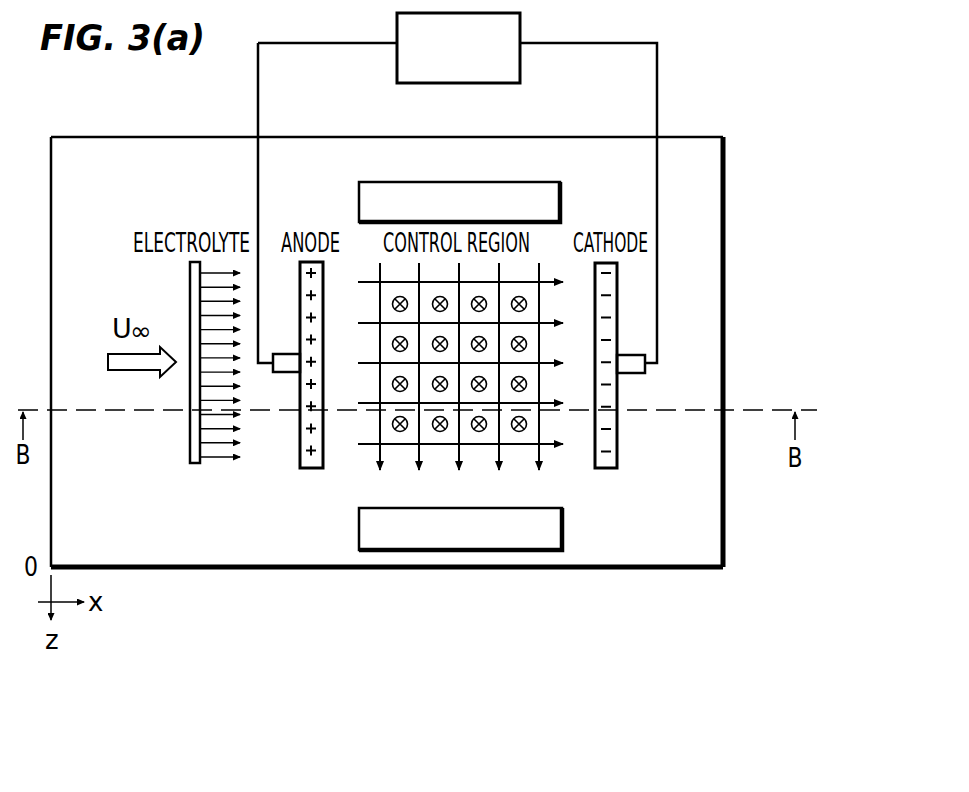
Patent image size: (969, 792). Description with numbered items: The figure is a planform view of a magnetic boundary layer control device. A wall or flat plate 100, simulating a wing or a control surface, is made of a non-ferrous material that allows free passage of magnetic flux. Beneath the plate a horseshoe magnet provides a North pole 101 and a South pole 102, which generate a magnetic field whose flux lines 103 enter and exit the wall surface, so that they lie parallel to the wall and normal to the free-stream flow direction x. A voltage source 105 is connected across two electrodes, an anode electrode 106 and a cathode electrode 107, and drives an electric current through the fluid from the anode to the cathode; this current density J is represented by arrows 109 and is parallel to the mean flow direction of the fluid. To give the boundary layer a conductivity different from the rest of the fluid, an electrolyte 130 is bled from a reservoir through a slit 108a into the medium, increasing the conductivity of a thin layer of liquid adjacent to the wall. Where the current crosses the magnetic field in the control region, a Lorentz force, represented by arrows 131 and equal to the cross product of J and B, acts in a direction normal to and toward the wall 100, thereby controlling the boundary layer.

The wall or flat plate 100 is at (725, 173).
The North pole 101 is at (357, 192).
The South pole 102 is at (476, 551).
The flux lines 103 is at (377, 461).
The voltage source 105 is at (521, 17).
The anode electrode 106 is at (300, 440).
The cathode electrode 107 is at (617, 438).
The slit 108a is at (190, 432).
The arrows representing current density 109 is at (553, 443).
The electrolyte 130 is at (227, 463).
The arrows representing Lorentz force 131 is at (520, 296).